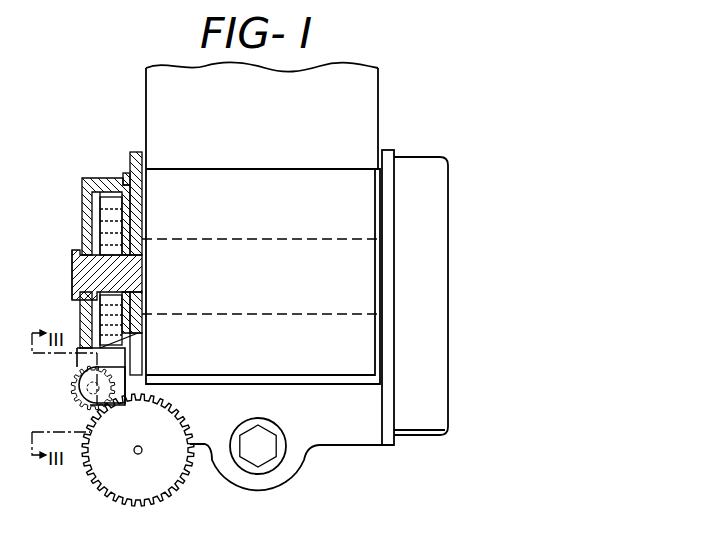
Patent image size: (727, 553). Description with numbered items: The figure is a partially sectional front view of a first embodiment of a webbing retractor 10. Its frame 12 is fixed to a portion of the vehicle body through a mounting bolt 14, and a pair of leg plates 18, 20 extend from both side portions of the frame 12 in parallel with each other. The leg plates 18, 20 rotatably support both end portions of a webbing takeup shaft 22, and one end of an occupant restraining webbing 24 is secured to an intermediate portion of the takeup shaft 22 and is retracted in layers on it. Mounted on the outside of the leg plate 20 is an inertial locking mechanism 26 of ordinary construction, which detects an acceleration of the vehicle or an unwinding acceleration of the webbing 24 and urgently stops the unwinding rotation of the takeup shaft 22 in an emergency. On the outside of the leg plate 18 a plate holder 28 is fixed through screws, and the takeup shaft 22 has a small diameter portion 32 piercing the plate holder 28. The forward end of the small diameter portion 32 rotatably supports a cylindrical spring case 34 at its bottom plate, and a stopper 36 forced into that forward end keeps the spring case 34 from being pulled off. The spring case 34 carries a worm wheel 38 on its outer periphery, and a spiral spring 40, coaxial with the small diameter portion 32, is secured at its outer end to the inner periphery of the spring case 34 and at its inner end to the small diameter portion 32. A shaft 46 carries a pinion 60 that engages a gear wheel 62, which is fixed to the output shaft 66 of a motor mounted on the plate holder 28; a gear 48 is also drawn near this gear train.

The webbing retractor 10 is at (393, 127).
The frame 12 is at (348, 430).
The mounting bolt 14 is at (267, 457).
The leg plate 18 is at (136, 150).
The leg plate 20 is at (393, 172).
The webbing takeup shaft 22 is at (250, 238).
The occupant restraining webbing 24 is at (153, 85).
The inertial locking mechanism 26 is at (418, 420).
The plate holder 28 is at (126, 173).
The small diameter portion 32 is at (97, 272).
The spring case 34 is at (82, 205).
The stopper 36 is at (72, 268).
The worm wheel 38 is at (102, 178).
The spiral spring 40 is at (100, 215).
The shaft 46 is at (77, 390).
The pinion gear 48 is at (82, 392).
The pinion 60 is at (76, 380).
The gear wheel 62 is at (95, 477).
The output shaft 66 is at (142, 455).